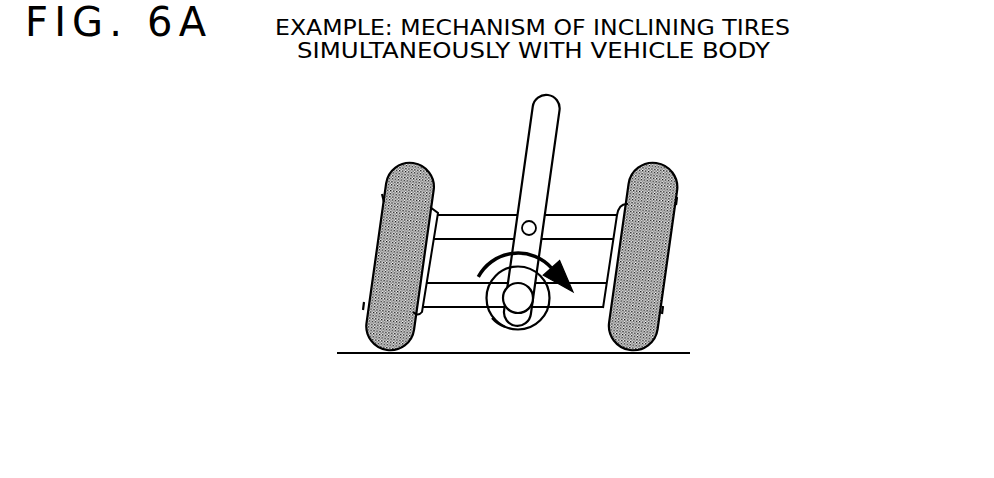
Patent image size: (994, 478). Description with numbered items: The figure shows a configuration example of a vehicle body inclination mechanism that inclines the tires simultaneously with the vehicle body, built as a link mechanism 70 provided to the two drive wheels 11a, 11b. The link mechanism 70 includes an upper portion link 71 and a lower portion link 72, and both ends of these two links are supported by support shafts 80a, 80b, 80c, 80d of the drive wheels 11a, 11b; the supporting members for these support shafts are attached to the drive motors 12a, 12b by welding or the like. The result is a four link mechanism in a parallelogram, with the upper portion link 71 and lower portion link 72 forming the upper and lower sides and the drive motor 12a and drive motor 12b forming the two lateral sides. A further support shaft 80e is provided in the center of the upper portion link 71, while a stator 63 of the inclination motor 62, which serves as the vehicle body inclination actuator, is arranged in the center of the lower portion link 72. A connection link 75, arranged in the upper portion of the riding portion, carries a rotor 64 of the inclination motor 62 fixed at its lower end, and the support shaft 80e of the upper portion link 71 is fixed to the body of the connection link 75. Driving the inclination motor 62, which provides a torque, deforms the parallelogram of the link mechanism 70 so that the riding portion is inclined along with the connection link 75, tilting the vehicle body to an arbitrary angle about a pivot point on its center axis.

The drive wheel 11a is at (400, 163).
The drive wheel 11b is at (667, 163).
The drive motor 12a is at (348, 241).
The drive motor 12b is at (698, 247).
The inclination motor 62 is at (518, 333).
The stator 63 is at (544, 326).
The rotor 64 is at (503, 329).
The link mechanism 70 is at (550, 248).
The upper portion link 71 is at (474, 213).
The lower portion link 72 is at (436, 314).
The connection link 75 is at (562, 101).
The support shaft 80a is at (383, 198).
The support shaft 80b is at (678, 201).
The support shaft 80c is at (363, 306).
The support shaft 80d is at (663, 310).
The support shaft 80e is at (545, 207).